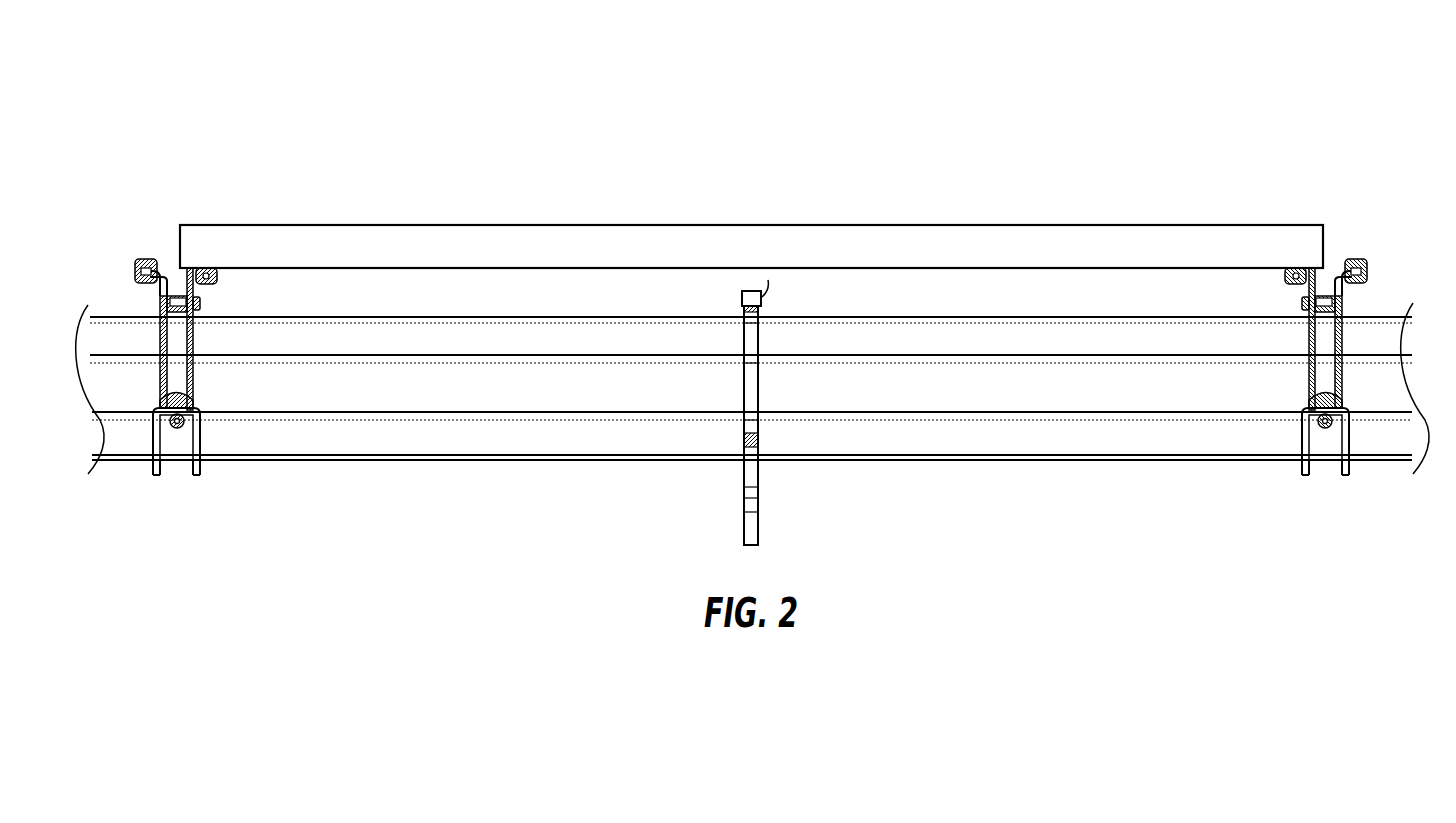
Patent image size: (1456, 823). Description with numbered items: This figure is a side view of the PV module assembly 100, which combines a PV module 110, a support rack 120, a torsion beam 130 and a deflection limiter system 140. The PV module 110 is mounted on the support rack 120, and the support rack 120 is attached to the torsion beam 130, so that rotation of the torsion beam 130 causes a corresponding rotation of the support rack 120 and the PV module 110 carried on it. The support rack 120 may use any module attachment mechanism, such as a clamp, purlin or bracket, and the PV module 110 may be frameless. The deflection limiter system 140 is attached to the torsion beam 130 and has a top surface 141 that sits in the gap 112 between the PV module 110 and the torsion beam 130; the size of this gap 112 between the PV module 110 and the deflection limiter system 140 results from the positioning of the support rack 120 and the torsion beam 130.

The PV module assembly 100 is at (1379, 82).
The PV module 110 is at (1036, 247).
The gap 112 is at (762, 294).
The support rack 120 is at (1370, 269).
The torsion beam 130 is at (985, 440).
The deflection limiter system 140 is at (766, 386).
The top surface 141 is at (744, 289).